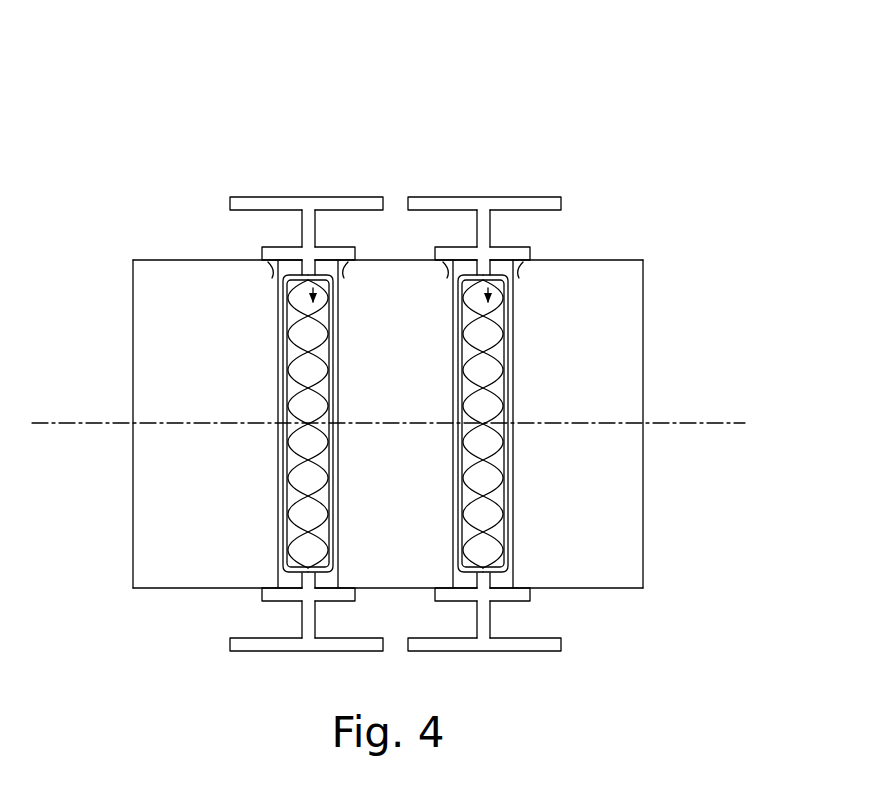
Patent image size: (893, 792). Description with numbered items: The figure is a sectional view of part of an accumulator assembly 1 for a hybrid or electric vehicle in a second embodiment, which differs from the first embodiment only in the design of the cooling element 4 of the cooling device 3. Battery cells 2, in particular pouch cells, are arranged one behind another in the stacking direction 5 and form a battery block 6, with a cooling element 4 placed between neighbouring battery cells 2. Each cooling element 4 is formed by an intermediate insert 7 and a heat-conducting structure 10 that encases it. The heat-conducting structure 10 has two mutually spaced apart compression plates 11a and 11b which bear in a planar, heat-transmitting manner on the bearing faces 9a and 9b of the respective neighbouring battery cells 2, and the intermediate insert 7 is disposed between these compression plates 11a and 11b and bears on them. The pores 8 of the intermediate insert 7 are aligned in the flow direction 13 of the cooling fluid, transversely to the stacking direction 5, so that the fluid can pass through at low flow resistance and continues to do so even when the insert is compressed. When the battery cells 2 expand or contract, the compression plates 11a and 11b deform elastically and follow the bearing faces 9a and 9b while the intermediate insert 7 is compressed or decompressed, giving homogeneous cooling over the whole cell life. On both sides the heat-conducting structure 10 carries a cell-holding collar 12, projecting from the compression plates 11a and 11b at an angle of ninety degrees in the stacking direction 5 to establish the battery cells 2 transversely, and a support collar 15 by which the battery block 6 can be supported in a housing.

The accumulator assembly 1 is at (692, 246).
The battery cell 2 is at (216, 415).
The cooling device 3 is at (325, 74).
The cooling element 4 is at (392, 117).
The stacking direction 5 is at (700, 423).
The battery block 6 is at (665, 345).
The intermediate insert 7 is at (318, 262).
The pores 8 is at (298, 527).
The bearing face 9a is at (276, 335).
The bearing face 9b is at (130, 450).
The heat-conducting structure 10 is at (343, 194).
The compression plate 11a is at (276, 440).
The compression plate 11b is at (335, 500).
The cell-holding collar 12 is at (262, 251).
The flow direction 13 is at (287, 517).
The support collar 15 is at (247, 202).